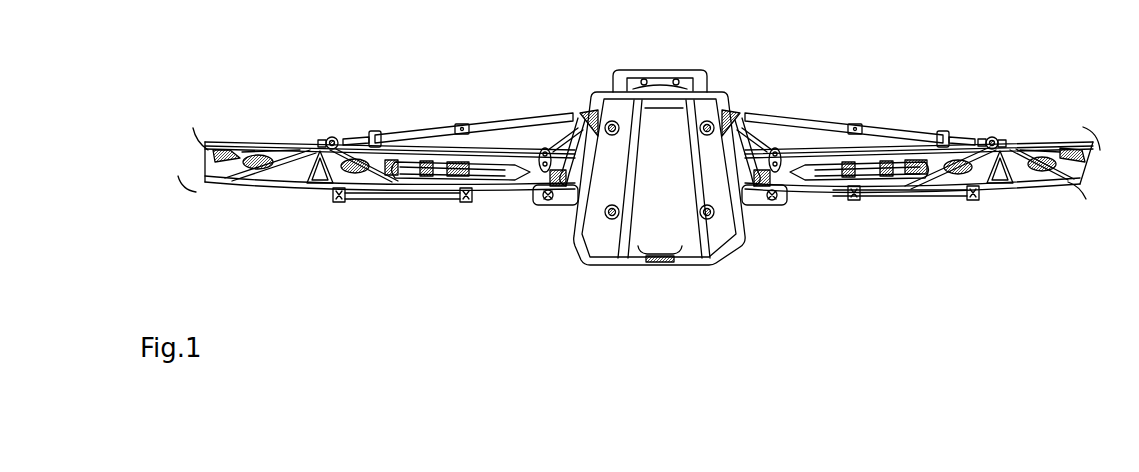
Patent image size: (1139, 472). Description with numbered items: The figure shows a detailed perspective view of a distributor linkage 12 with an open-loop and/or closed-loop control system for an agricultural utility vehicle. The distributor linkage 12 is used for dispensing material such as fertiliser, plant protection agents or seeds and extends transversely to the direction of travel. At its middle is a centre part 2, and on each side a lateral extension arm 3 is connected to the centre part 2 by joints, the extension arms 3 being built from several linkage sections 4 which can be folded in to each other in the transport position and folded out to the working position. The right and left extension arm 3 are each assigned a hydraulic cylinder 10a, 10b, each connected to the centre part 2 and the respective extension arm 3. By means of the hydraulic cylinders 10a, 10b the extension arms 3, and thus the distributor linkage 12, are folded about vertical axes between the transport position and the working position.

The centre part 2 is at (717, 88).
The extension arm 3 is at (387, 215).
The linkage section 4 is at (218, 180).
The hydraulic cylinder 10a is at (520, 127).
The hydraulic cylinder 10b is at (807, 127).
The distributor linkage 12 is at (1017, 113).